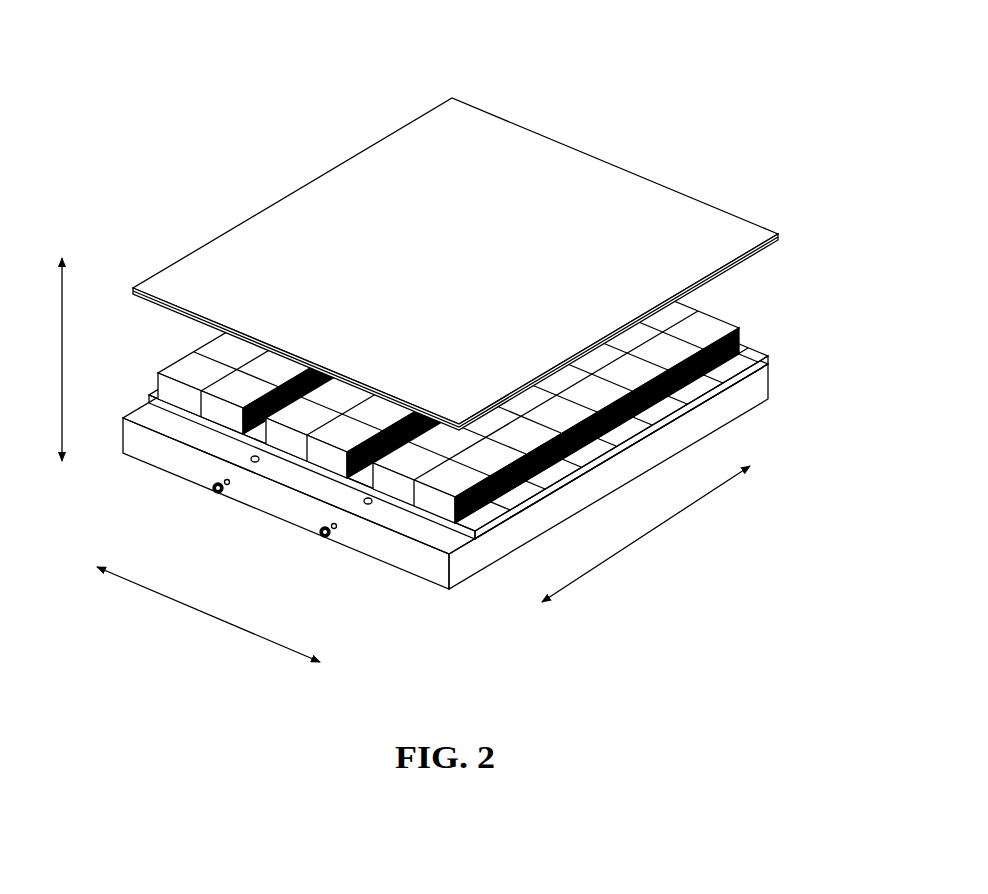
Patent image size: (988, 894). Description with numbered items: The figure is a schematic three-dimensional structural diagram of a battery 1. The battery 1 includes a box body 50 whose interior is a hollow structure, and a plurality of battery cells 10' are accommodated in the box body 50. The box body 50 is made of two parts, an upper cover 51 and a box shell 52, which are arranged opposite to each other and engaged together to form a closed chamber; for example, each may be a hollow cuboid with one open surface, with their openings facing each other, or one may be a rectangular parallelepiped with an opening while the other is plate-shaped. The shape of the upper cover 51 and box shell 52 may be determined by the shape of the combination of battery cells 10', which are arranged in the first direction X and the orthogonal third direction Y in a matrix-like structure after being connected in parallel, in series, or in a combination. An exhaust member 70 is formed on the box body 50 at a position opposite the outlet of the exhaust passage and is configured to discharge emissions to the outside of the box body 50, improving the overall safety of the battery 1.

The battery 1 is at (267, 36).
The battery cells 10' is at (448, 343).
The box body 50 is at (847, 239).
The upper cover 51 is at (605, 255).
The box shell 52 is at (717, 418).
The exhaust member 70 is at (275, 537).